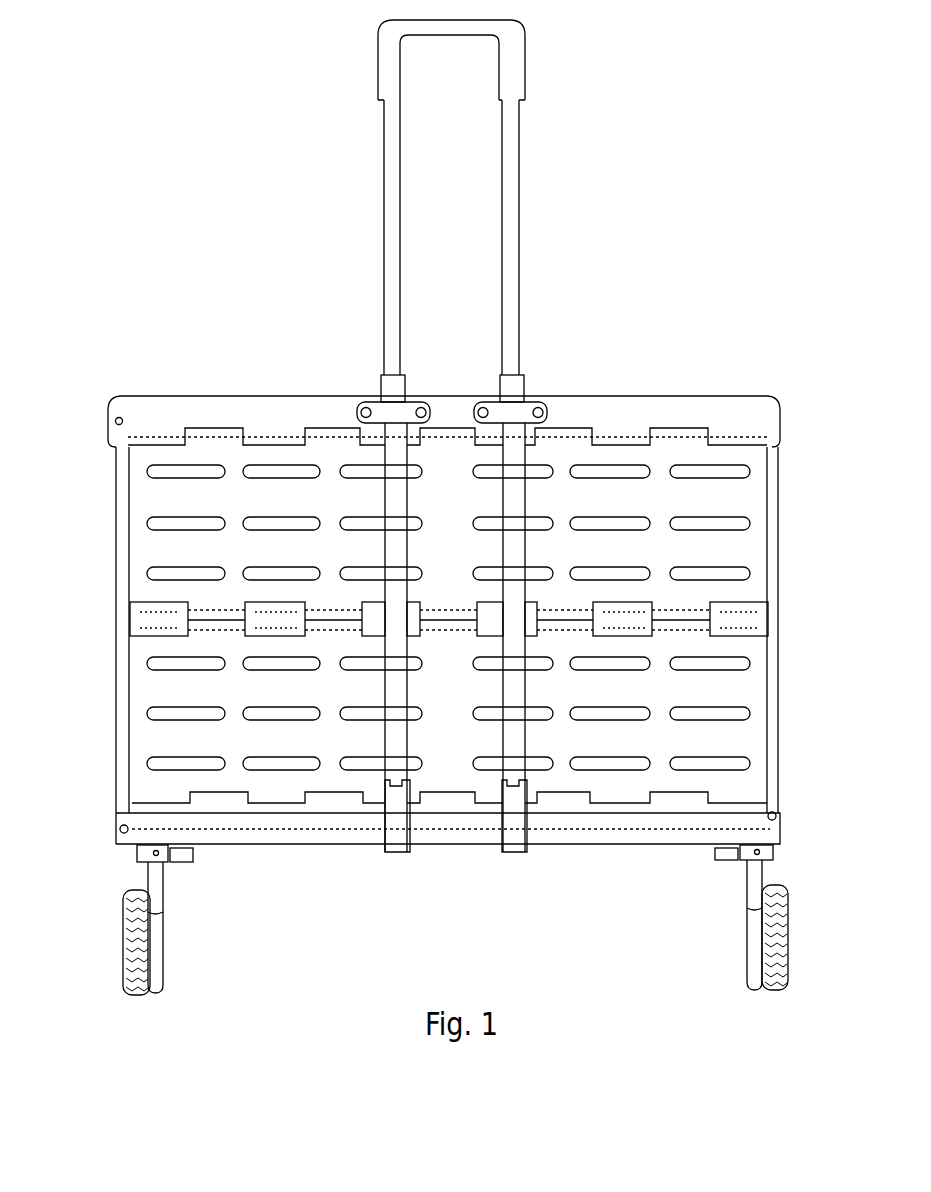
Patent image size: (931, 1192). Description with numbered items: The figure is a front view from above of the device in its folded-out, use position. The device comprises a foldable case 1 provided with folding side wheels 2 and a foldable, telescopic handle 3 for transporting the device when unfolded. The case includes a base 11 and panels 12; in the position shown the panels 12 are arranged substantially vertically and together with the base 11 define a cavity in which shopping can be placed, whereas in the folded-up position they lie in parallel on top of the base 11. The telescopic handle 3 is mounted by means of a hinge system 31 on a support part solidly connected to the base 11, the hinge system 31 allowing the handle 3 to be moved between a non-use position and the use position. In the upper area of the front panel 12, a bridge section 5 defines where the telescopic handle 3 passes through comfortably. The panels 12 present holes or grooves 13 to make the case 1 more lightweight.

The foldable case 1 is at (243, 397).
The folding side wheels 2 is at (810, 945).
The telescopic handle 3 is at (393, 300).
The bridge section 5 is at (512, 413).
The base 11 is at (312, 833).
The panels 12 is at (150, 553).
The holes or grooves 13 is at (160, 712).
The hinge system 31 is at (503, 787).